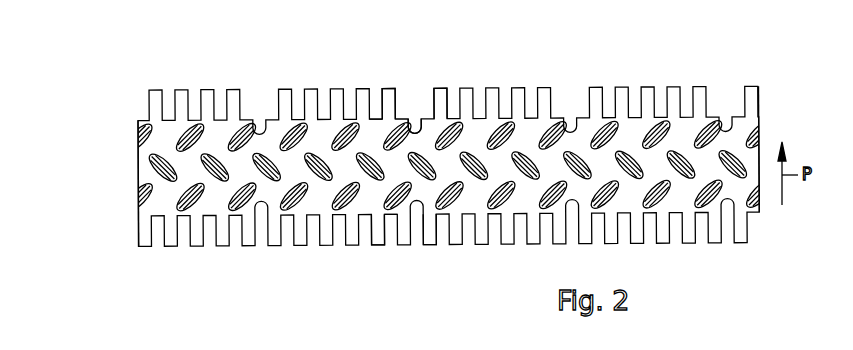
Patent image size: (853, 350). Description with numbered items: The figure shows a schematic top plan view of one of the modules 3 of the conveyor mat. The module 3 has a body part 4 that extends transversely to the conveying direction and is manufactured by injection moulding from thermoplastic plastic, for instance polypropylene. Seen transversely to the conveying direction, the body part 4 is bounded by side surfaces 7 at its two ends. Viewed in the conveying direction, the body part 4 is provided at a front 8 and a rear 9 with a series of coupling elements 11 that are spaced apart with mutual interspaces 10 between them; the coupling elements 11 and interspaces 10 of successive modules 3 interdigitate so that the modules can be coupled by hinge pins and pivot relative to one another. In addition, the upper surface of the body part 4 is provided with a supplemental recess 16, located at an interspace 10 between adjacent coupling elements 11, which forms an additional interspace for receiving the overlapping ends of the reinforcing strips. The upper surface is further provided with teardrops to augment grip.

The module 3 is at (126, 177).
The body part 4 is at (148, 208).
The side surface 7 is at (138, 165).
The front 8 is at (451, 84).
The rear 9 is at (424, 247).
The interspace 10 is at (377, 98).
The coupling element 11 is at (390, 98).
The supplemental recess 16 is at (415, 123).